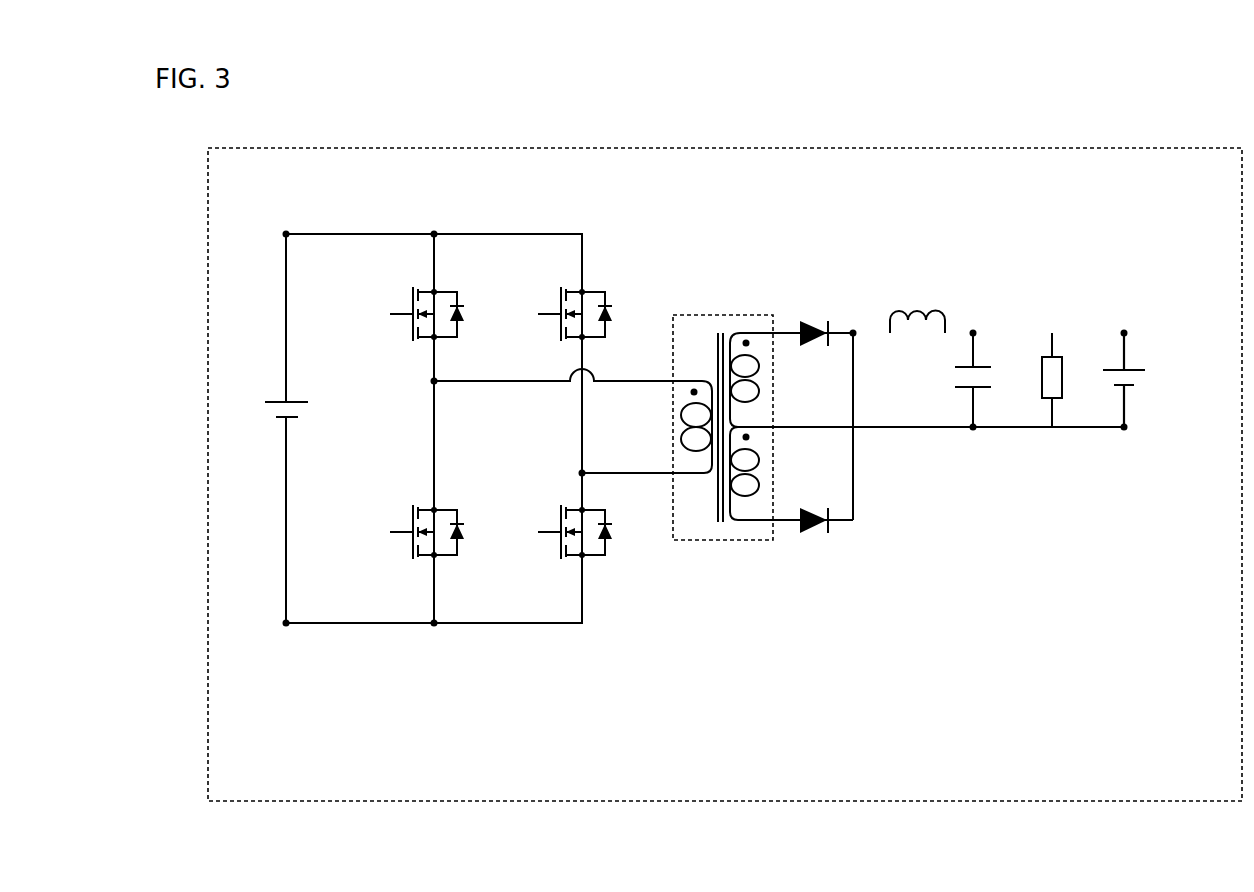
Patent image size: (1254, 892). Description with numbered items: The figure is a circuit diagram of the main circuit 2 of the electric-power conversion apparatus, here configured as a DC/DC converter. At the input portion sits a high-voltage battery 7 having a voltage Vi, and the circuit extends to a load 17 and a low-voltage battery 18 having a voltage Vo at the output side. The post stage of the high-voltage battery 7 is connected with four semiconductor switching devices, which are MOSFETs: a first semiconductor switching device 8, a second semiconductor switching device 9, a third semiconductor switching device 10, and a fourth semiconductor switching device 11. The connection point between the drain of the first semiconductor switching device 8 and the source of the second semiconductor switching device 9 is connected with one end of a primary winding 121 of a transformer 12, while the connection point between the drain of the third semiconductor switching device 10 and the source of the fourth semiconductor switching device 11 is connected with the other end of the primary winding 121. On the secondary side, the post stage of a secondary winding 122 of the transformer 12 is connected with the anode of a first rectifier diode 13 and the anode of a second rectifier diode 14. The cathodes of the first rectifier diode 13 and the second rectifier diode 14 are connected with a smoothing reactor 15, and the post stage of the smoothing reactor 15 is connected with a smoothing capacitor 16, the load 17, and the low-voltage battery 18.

The main circuit 2 is at (908, 163).
The high-voltage battery 7 is at (283, 400).
The first semiconductor switching device 8 is at (405, 300).
The second semiconductor switching device 9 is at (405, 525).
The third semiconductor switching device 10 is at (562, 289).
The fourth semiconductor switching device 11 is at (550, 525).
The transformer 12 is at (742, 448).
The primary winding 121 is at (698, 478).
The secondary winding 122 is at (735, 500).
The first rectifier diode 13 is at (790, 322).
The second rectifier diode 14 is at (807, 510).
The smoothing reactor 15 is at (918, 308).
The smoothing capacitor 16 is at (953, 380).
The load 17 is at (1063, 378).
The low-voltage battery 18 is at (1132, 366).